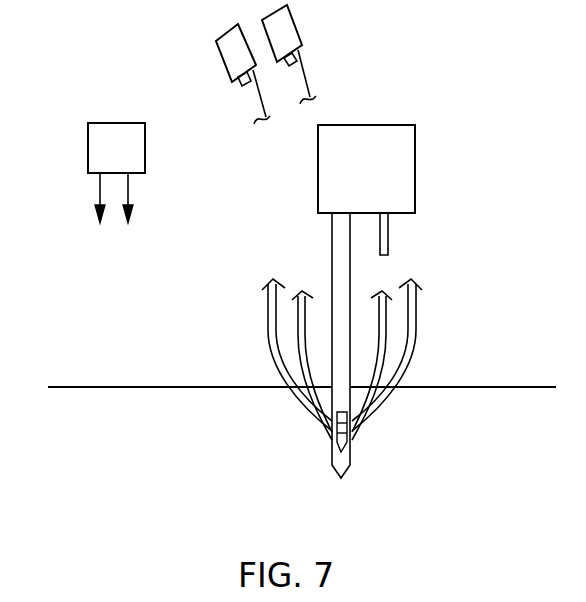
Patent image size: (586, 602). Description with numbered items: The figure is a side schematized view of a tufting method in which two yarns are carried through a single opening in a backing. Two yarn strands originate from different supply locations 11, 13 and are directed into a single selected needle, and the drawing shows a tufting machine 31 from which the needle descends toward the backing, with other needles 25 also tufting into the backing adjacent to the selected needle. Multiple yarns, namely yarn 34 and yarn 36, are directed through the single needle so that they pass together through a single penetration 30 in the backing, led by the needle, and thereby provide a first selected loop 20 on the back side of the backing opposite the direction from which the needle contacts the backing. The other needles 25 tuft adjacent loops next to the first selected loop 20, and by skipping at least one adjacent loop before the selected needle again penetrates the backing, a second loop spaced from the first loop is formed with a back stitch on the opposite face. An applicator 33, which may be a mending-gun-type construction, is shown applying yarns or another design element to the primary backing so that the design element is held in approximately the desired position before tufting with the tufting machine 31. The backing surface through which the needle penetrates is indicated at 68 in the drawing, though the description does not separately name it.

The supply location 11 is at (217, 50).
The supply location 13 is at (290, 12).
The applicator 33 is at (97, 142).
The tufting machine 31 is at (405, 155).
The other needles 25 is at (390, 233).
The tissue surface 68 is at (463, 388).
The first selected loop 20 is at (340, 480).
The penetration 30 is at (321, 391).
The yarn 34 is at (268, 324).
The yarn 36 is at (296, 311).